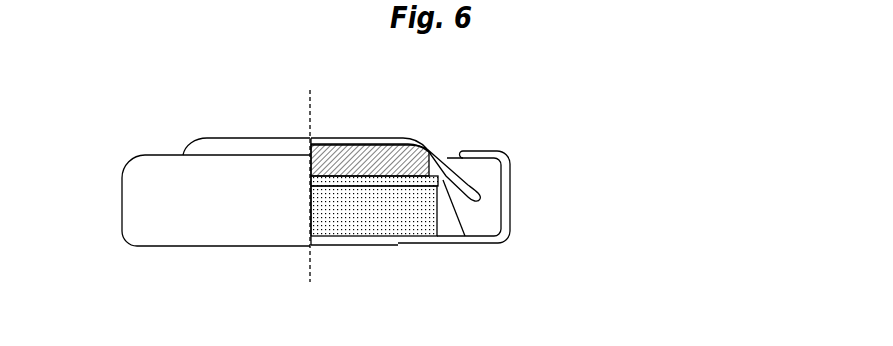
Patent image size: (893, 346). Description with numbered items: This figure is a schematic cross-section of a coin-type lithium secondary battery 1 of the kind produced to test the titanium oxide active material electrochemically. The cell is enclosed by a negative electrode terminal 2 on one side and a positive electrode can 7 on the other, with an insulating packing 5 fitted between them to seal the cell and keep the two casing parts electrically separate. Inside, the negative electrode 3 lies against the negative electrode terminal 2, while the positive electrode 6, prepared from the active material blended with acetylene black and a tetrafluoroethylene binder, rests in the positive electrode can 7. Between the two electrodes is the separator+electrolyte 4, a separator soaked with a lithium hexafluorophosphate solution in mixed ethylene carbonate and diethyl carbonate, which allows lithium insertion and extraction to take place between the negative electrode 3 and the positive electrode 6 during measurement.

The coin-type lithium secondary battery 1 is at (216, 192).
The negative electrode terminal 2 is at (326, 138).
The negative electrode 3 is at (378, 153).
The separator+electrolyte 4 is at (439, 181).
The insulating packing 5 is at (473, 218).
The positive electrode 6 is at (388, 218).
The positive electrode can 7 is at (343, 244).